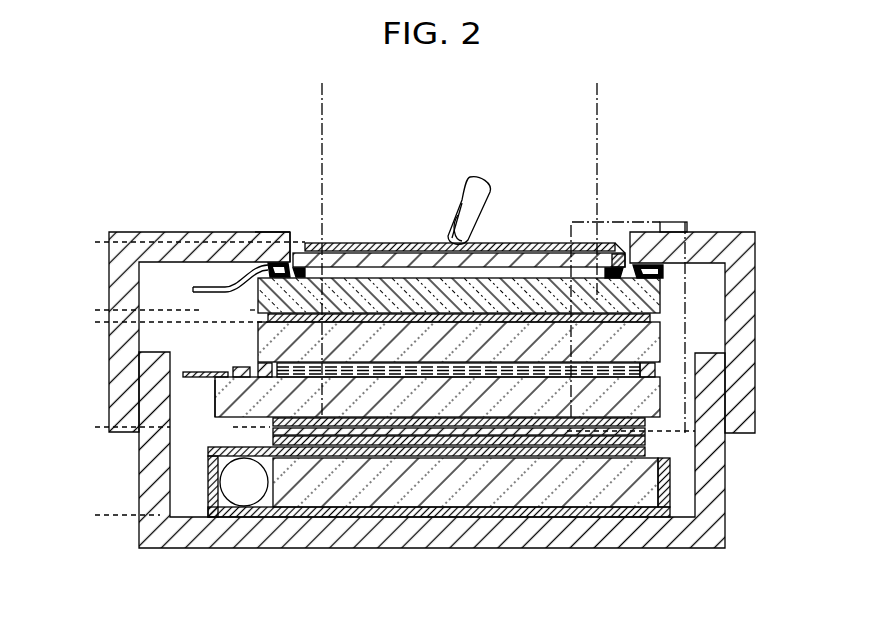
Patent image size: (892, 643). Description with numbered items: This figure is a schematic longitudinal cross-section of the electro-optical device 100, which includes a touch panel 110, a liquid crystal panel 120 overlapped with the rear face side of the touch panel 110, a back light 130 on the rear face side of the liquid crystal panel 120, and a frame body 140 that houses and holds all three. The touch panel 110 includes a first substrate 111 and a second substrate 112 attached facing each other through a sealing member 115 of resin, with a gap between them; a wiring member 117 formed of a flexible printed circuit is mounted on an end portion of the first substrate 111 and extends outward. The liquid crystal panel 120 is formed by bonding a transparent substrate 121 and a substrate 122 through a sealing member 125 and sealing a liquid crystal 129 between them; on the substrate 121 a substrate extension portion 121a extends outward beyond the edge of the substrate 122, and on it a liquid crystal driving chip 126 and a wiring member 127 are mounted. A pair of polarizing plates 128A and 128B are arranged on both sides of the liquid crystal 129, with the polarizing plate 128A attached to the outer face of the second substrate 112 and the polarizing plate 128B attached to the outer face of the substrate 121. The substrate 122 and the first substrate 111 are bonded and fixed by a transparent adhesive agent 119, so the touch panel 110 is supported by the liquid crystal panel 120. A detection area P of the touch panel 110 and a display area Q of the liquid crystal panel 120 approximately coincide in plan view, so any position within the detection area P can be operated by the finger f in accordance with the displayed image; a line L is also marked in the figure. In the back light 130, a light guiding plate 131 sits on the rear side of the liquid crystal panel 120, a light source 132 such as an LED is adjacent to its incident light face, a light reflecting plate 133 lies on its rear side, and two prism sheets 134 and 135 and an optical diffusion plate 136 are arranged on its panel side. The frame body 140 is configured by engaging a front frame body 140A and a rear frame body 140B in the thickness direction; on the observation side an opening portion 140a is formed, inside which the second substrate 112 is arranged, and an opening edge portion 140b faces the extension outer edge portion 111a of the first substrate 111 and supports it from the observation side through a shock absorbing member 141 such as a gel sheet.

The electro-optical device 100 is at (264, 63).
The touch panel 110 is at (100, 242).
The liquid crystal panel 120 is at (100, 322).
The back light 130 is at (100, 428).
The frame body 140 is at (133, 232).
The front frame body 140A is at (752, 248).
The rear frame body 140B is at (717, 523).
The opening portion 140a is at (292, 233).
The opening edge portion 140b is at (265, 230).
The wiring member 117 is at (203, 286).
The polarizing plate 128A is at (343, 243).
The second substrate 112 is at (405, 252).
The first substrate 111 is at (540, 243).
The sealing member 115 is at (600, 272).
The shock absorbing member 141 is at (660, 268).
The extension outer edge portion 111a is at (655, 318).
The transparent adhesive agent 119 is at (656, 345).
The substrate 122 is at (652, 370).
The sealing member 125 is at (656, 373).
The liquid crystal 129 is at (658, 380).
The transparent substrate 121 is at (448, 400).
The substrate extension portion 121a is at (212, 392).
The liquid crystal driving chip 126 is at (240, 366).
The wiring member 127 is at (207, 371).
The polarizing plate 128B is at (646, 423).
The light guiding plate 131 is at (374, 492).
The light source 132 is at (236, 492).
The light reflecting plate 133 is at (312, 517).
The prism sheet 134 is at (490, 450).
The prism sheet 135 is at (548, 436).
The optical diffusion plate 136 is at (612, 428).
The finger f is at (477, 210).
The reference line L is at (640, 221).
The detection area P is at (597, 142).
The display area Q is at (595, 83).